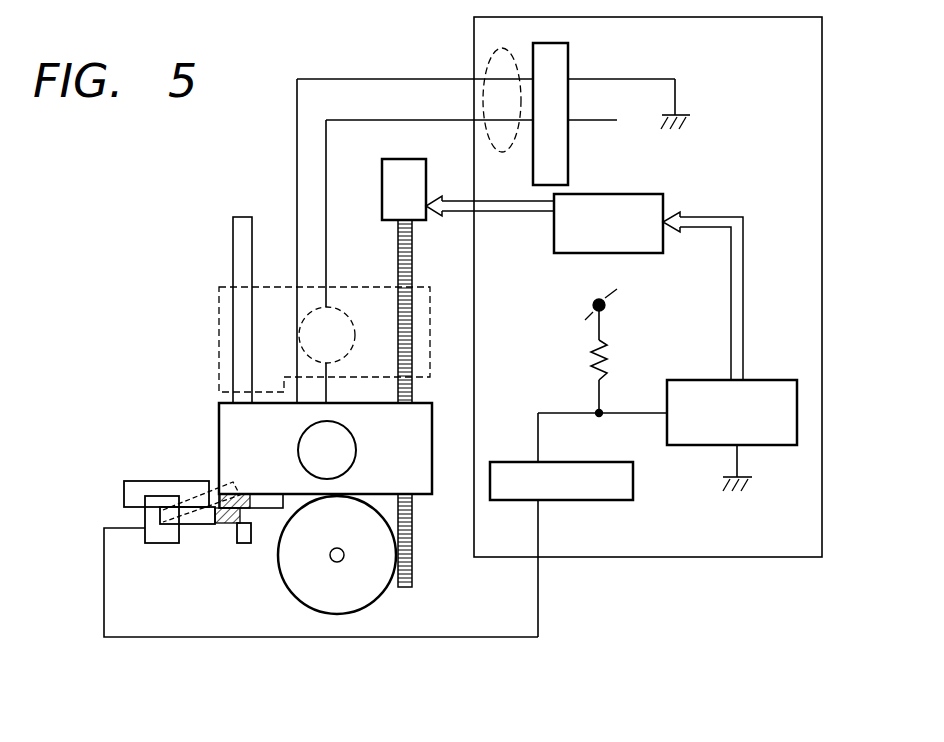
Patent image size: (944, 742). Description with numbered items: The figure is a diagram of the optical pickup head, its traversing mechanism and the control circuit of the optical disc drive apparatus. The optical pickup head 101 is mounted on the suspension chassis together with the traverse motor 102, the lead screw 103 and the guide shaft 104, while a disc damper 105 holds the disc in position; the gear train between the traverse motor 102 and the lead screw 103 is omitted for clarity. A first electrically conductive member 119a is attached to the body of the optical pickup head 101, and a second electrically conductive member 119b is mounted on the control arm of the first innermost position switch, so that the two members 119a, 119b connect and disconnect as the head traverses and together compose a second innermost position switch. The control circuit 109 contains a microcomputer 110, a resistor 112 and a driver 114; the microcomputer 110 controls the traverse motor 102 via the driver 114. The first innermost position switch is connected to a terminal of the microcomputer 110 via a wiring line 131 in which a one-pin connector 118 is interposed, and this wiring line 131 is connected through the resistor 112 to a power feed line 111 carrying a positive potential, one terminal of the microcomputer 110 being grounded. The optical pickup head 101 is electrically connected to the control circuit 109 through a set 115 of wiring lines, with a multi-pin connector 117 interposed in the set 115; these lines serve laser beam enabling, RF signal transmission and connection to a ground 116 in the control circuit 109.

The optical pickup head 101 is at (219, 430).
The traverse motor 102 is at (382, 185).
The lead screw 103 is at (398, 243).
The guide shaft 104 is at (233, 250).
The disc damper 105 is at (378, 599).
The control circuit 109 is at (474, 50).
The microcomputer 110 is at (783, 380).
The power feed line 111 is at (593, 302).
The resistor 112 is at (588, 357).
The driver 114 is at (628, 255).
The set of wiring lines 115 is at (483, 108).
The ground 116 is at (690, 115).
The multi-pin connector 117 is at (568, 62).
The 1-pin connector 118 is at (520, 462).
The first electrically conductive member 119a is at (220, 498).
The second electrically conductive member 119b is at (216, 525).
The wiring line 131 is at (272, 637).